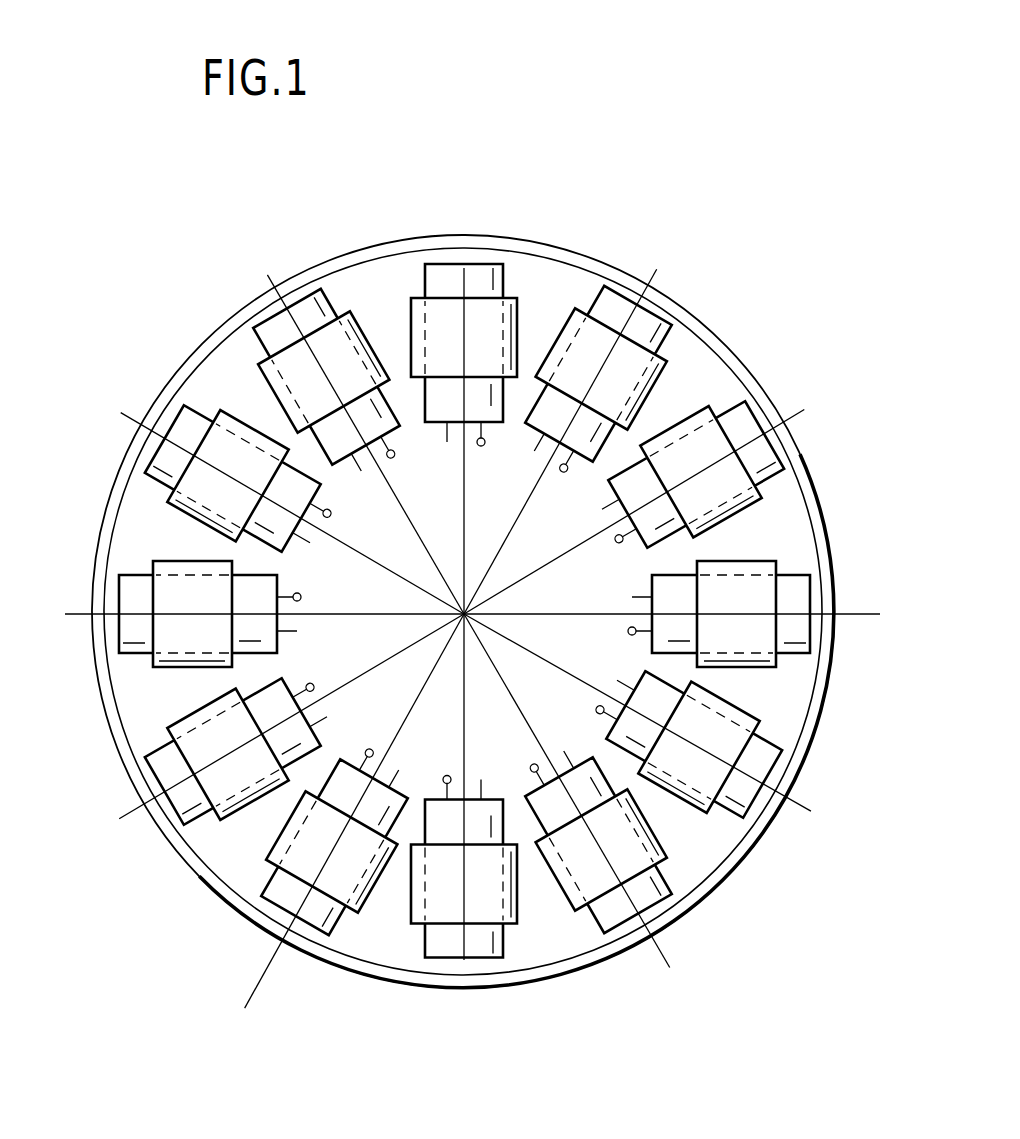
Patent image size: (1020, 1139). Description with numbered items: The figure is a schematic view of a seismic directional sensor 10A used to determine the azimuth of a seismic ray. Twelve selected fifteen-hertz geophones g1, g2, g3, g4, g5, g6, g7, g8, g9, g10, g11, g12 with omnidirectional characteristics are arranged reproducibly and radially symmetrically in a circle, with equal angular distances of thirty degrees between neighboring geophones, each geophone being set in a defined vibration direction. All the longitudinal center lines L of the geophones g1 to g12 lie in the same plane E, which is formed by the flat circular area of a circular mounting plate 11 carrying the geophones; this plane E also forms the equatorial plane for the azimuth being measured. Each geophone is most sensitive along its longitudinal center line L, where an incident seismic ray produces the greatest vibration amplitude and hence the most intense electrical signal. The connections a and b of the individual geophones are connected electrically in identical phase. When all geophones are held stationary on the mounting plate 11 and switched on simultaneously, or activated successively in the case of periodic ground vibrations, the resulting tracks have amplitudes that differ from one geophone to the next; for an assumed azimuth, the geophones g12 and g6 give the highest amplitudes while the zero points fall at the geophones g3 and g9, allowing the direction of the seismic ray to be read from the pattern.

The seismic directional sensor 10A is at (635, 202).
The circular mounting plate 11 is at (351, 975).
The plane E is at (386, 930).
The longitudinal center line L is at (332, 292).
The connection a is at (613, 540).
The connection b is at (607, 507).
The geophone g1 is at (767, 428).
The geophone g2 is at (625, 298).
The geophone g3 is at (463, 259).
The geophone g4 is at (292, 303).
The geophone g5 is at (163, 432).
The geophone g6 is at (142, 655).
The geophone g7 is at (160, 792).
The geophone g8 is at (270, 883).
The geophone g9 is at (464, 958).
The geophone g10 is at (657, 902).
The geophone g11 is at (758, 800).
The geophone g12 is at (792, 565).